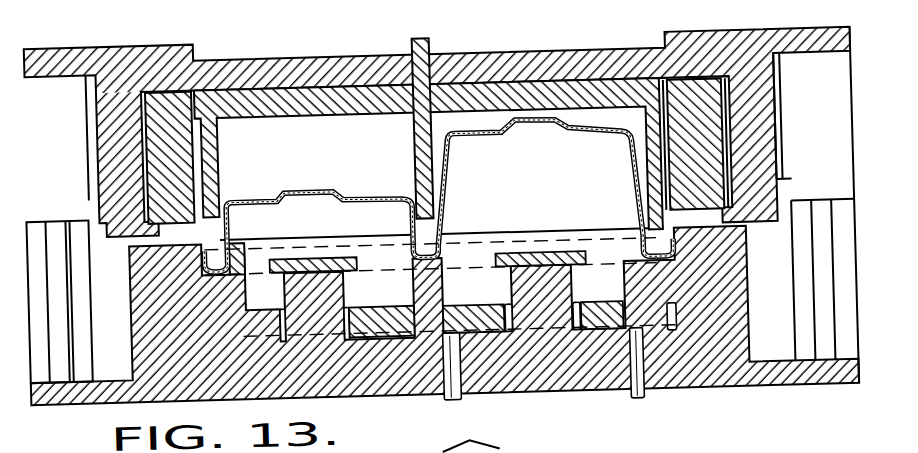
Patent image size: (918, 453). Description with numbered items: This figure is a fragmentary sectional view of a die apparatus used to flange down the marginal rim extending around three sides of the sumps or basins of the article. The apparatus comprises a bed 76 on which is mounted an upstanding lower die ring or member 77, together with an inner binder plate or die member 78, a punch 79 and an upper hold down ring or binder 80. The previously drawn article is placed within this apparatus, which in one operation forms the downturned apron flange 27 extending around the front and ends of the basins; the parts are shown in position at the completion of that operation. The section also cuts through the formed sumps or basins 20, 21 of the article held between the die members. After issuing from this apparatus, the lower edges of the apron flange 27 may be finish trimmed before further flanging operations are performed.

The upper hold down ring or binder 80 is at (184, 93).
The punch 79 is at (446, 87).
The tall formed cup part 20 is at (464, 152).
The short formed cup part 21 is at (348, 171).
The apron flange 27 is at (195, 258).
The lower die ring or member 77 is at (154, 303).
The inner binder plate or die member 78 is at (397, 296).
The bed 76 is at (562, 383).